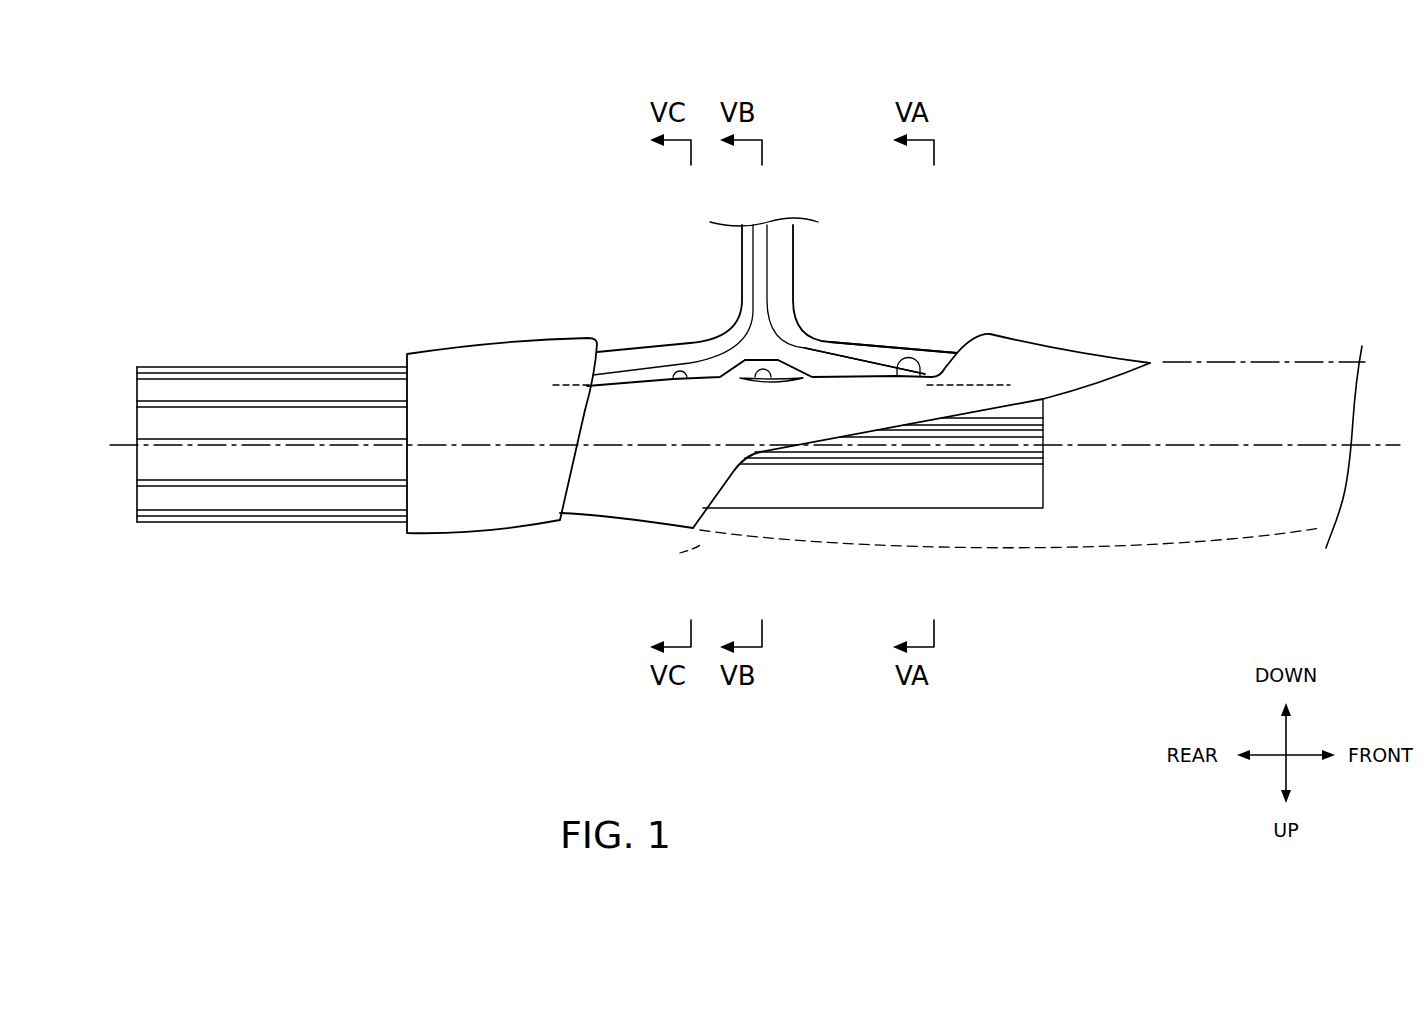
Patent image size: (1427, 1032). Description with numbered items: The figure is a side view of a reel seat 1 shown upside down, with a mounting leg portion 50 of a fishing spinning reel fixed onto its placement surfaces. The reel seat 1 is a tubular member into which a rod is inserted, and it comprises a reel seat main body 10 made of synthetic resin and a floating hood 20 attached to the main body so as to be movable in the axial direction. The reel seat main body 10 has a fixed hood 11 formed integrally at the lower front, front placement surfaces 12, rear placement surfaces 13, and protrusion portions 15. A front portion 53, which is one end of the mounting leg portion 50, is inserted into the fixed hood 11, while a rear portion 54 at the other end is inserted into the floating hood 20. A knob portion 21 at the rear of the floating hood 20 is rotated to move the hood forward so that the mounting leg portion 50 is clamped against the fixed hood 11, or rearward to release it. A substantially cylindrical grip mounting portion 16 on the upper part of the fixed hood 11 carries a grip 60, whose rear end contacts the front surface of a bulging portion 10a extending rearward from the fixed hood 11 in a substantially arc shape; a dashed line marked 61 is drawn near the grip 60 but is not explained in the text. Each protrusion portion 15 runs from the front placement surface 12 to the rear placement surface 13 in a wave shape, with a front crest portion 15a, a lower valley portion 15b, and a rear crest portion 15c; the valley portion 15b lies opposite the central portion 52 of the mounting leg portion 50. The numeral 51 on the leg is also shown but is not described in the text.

The reel seat 1 is at (1162, 257).
The reel seat main body 10 is at (580, 546).
The bulging portion 10a is at (697, 482).
The fixed hood 11 is at (1002, 345).
The front placement surface 12 is at (990, 383).
The rear placement surface 13 is at (562, 380).
The protrusion portion 15 is at (849, 366).
The front crest portion 15a is at (901, 375).
The valley portion 15b is at (763, 380).
The rear crest portion 15c is at (676, 381).
The grip mounting portion 16 is at (1008, 492).
The floating hood 20 is at (518, 360).
The knob portion 21 is at (315, 366).
The mounting leg portion 50 is at (920, 286).
The tube outer wall 51 is at (742, 278).
The central portion 52 is at (772, 348).
The front portion 53 is at (923, 350).
The rear portion 54 is at (647, 358).
The grip 60 is at (975, 552).
The hidden member portion 61 is at (680, 553).